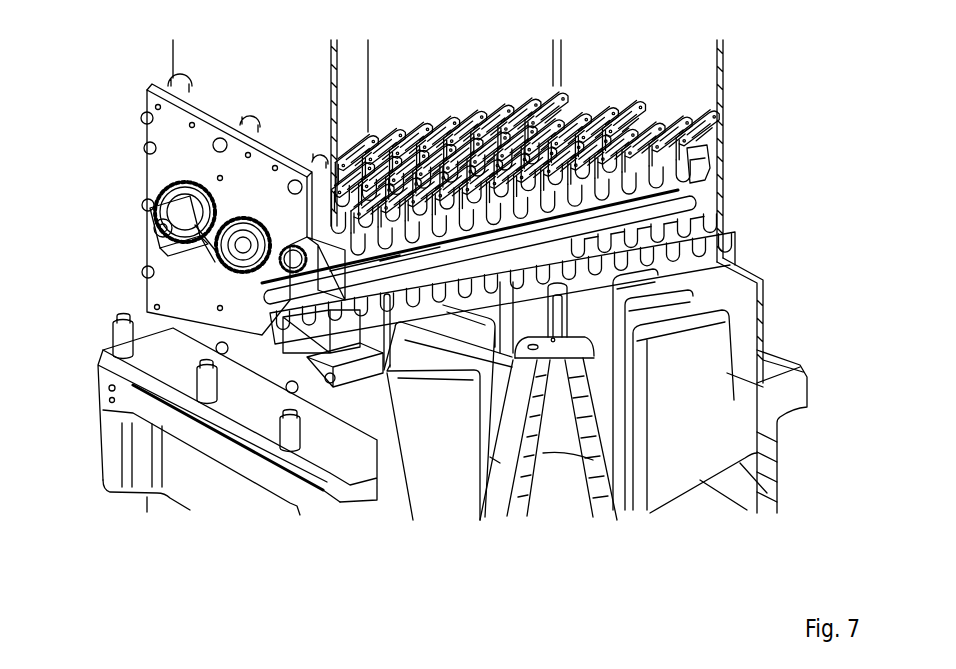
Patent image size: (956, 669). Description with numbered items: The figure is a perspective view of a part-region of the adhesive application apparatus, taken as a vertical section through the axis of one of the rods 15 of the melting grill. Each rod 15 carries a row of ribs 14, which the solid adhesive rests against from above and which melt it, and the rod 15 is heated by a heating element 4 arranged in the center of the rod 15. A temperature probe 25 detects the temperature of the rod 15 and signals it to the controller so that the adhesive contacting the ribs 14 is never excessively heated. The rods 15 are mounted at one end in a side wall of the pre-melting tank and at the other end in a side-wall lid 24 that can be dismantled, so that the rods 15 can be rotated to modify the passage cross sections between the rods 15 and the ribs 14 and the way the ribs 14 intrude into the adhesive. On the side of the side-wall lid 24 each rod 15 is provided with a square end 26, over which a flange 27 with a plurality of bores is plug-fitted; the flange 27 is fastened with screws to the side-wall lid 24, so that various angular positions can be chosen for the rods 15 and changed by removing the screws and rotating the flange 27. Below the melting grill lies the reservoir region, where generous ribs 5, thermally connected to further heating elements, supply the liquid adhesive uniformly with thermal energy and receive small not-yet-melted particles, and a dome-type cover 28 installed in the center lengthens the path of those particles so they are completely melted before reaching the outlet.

The heating element 4 is at (567, 261).
The ribs 5 is at (445, 478).
The ribs 14 is at (706, 178).
The rod 15 is at (717, 182).
The side-wall lid 24 is at (193, 300).
The temperature probe 25 is at (376, 258).
The square end 26 is at (143, 237).
The flange 27 is at (187, 173).
The dome-type cover 28 is at (560, 368).